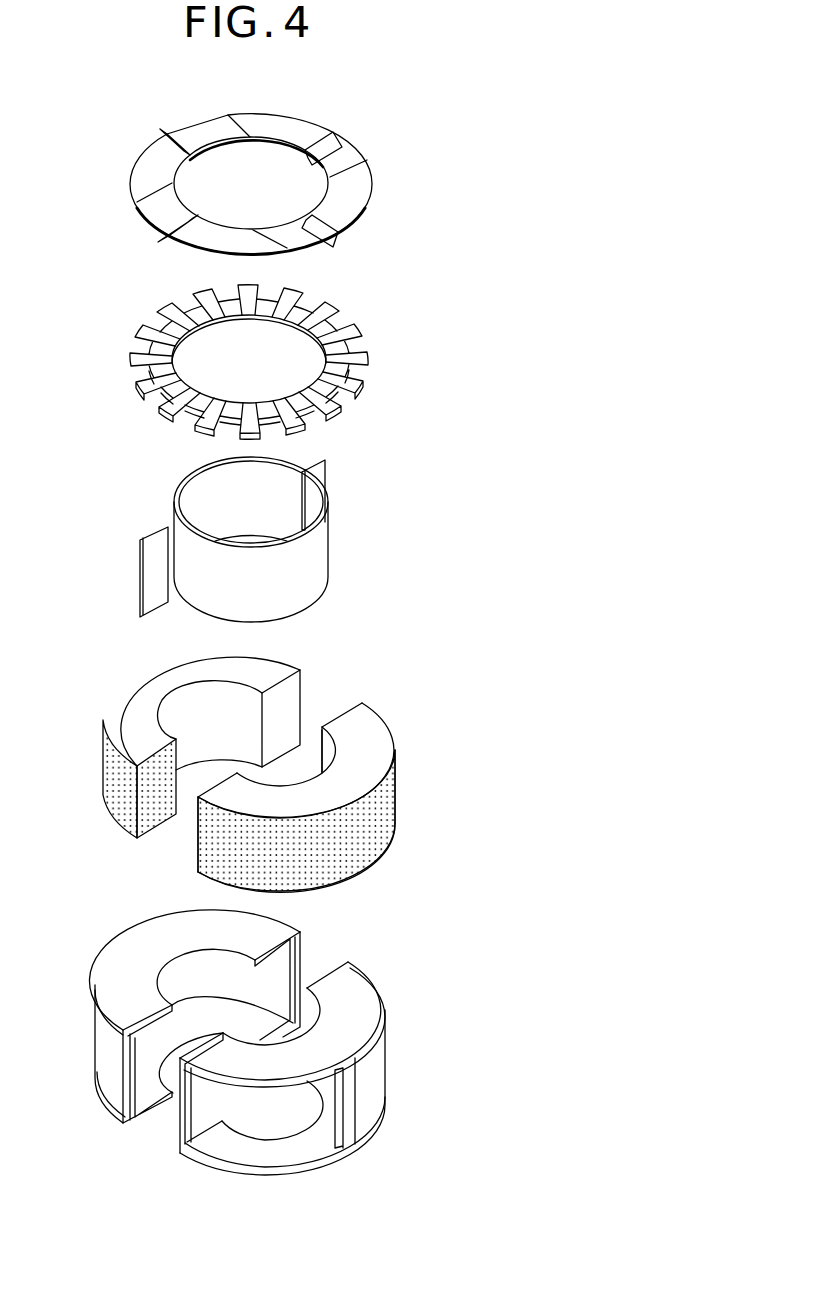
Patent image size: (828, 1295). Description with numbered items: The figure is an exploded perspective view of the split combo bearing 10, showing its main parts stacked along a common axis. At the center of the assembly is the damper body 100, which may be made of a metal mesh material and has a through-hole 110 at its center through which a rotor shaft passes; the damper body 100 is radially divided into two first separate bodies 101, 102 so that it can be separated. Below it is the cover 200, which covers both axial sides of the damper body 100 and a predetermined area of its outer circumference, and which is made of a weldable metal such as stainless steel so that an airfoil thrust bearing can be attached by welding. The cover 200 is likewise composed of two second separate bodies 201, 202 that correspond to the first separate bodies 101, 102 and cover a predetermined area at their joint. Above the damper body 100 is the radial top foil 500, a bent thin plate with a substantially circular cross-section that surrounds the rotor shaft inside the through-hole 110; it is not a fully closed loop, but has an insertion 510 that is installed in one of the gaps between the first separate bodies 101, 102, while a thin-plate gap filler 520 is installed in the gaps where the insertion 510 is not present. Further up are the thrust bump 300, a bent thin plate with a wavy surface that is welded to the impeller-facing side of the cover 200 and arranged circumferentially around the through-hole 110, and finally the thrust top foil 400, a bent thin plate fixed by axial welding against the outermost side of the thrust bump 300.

The split combo bearing 10 is at (390, 126).
The thrust top foil 400 is at (358, 193).
The thrust bump 300 is at (362, 342).
The radial top foil 500 is at (320, 537).
The insertion 510 is at (325, 468).
The gap filler 520 is at (160, 528).
The damper body 100 is at (362, 664).
The first separate body 101 is at (137, 692).
The first separate body 102 is at (368, 755).
The through-hole 110 is at (307, 772).
The cover 200 is at (418, 1026).
The second separate body 201 is at (133, 957).
The second separate body 202 is at (362, 991).